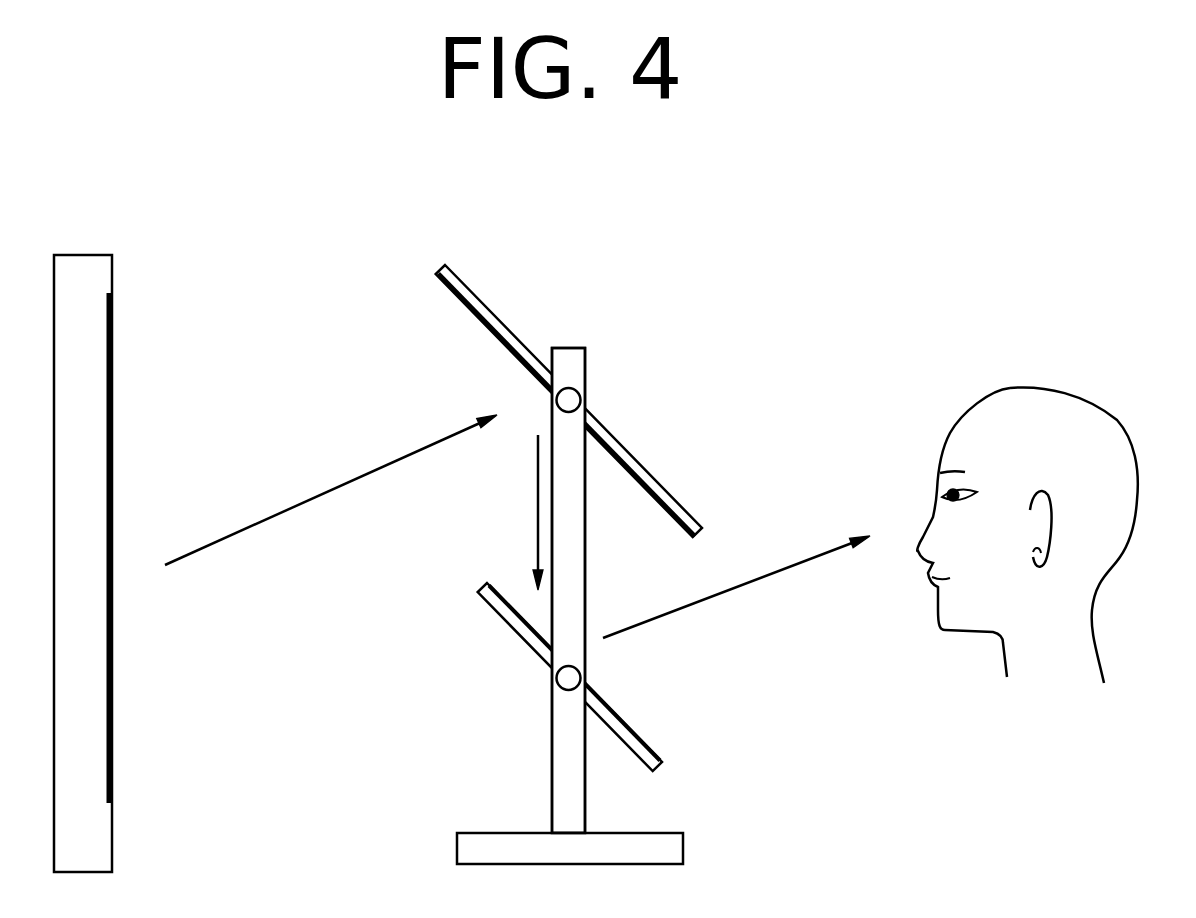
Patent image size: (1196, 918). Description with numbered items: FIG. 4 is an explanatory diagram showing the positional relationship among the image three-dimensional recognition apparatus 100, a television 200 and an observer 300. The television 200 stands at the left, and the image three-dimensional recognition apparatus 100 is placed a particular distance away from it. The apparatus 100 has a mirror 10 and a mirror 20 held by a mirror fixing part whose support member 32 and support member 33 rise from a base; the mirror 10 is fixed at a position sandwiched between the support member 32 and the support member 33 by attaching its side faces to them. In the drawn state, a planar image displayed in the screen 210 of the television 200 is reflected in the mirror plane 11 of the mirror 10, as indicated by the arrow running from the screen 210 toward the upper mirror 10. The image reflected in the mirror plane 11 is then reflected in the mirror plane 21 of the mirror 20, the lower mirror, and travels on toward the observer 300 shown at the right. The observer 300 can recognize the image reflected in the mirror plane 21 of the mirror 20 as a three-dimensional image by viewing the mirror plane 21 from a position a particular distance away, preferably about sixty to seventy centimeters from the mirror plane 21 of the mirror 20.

The image three-dimensional recognition apparatus 100 is at (747, 213).
The mirror 10 is at (569, 394).
The mirror plane 11 is at (539, 405).
The mirror 20 is at (551, 677).
The mirror plane 21 is at (589, 673).
The support member 32 is at (570, 574).
The support member 33 is at (568, 590).
The television 200 is at (106, 529).
The screen 210 is at (148, 548).
The observer 300 is at (1027, 502).